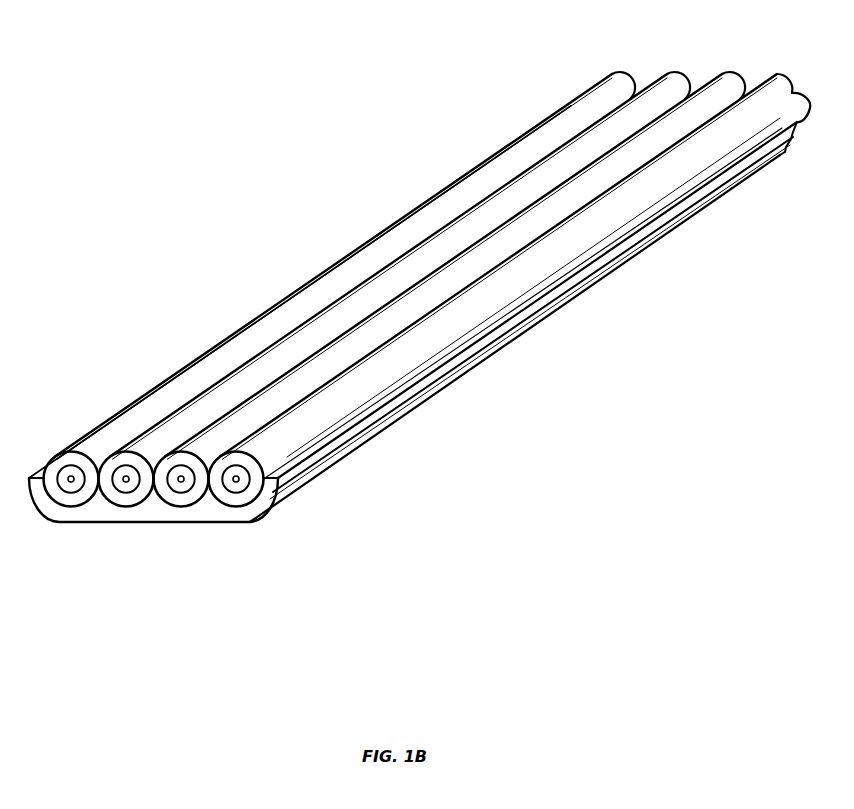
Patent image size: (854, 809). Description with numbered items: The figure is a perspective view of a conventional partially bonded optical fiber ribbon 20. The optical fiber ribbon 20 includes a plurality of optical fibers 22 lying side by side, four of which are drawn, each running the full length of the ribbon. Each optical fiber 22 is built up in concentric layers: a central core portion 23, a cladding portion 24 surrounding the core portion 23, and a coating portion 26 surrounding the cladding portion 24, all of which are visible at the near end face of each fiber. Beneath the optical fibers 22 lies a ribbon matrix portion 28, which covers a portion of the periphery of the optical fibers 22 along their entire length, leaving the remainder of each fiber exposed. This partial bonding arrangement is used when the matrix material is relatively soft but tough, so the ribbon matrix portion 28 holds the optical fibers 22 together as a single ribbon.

The optical fiber ribbon 20 is at (309, 179).
The optical fiber 22 is at (620, 70).
The core portion 23 is at (69, 483).
The cladding portion 24 is at (60, 487).
The coating portion 26 is at (75, 505).
The ribbon matrix portion 28 is at (518, 338).